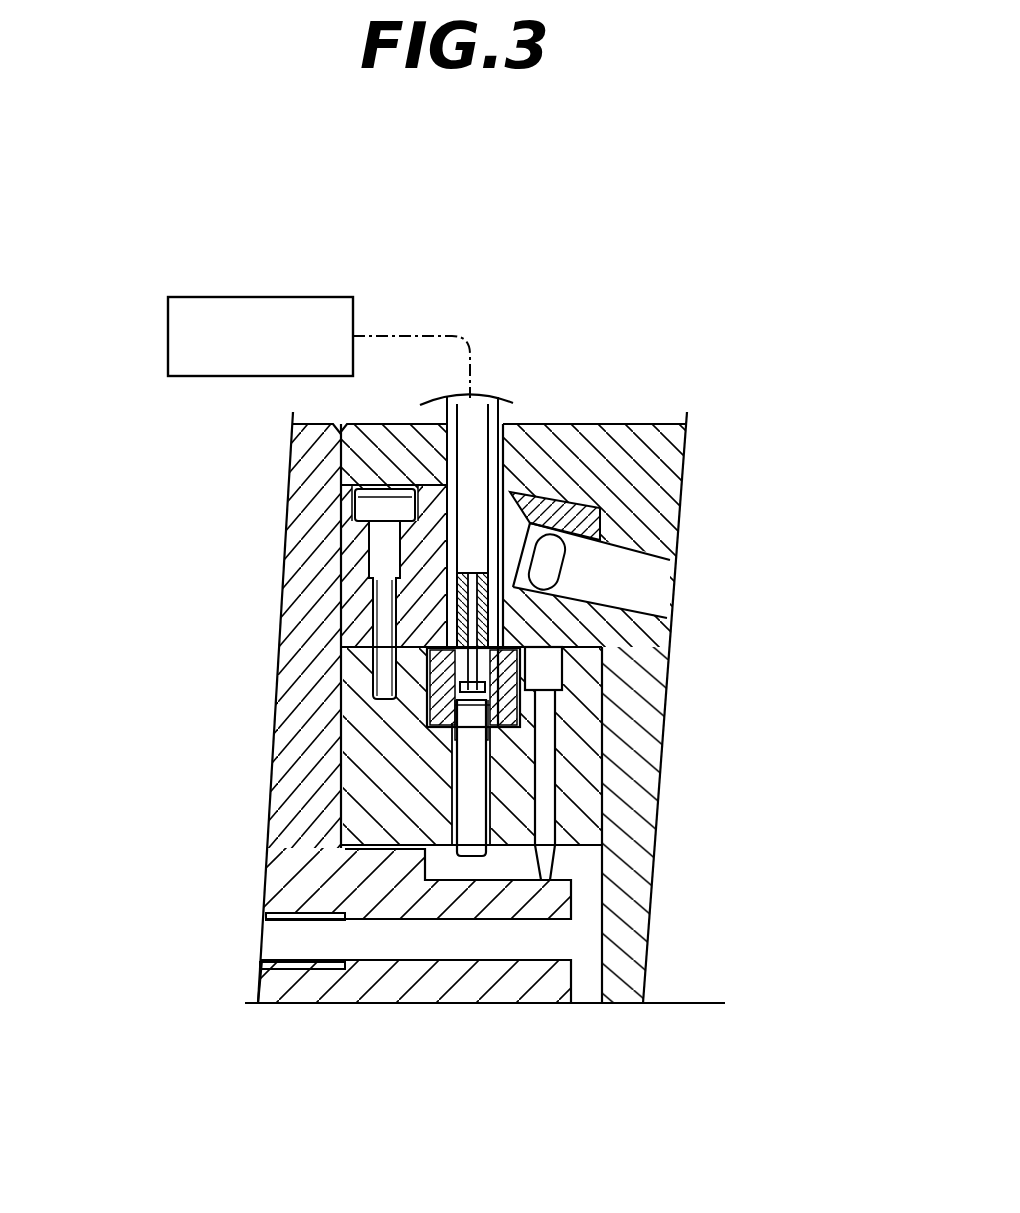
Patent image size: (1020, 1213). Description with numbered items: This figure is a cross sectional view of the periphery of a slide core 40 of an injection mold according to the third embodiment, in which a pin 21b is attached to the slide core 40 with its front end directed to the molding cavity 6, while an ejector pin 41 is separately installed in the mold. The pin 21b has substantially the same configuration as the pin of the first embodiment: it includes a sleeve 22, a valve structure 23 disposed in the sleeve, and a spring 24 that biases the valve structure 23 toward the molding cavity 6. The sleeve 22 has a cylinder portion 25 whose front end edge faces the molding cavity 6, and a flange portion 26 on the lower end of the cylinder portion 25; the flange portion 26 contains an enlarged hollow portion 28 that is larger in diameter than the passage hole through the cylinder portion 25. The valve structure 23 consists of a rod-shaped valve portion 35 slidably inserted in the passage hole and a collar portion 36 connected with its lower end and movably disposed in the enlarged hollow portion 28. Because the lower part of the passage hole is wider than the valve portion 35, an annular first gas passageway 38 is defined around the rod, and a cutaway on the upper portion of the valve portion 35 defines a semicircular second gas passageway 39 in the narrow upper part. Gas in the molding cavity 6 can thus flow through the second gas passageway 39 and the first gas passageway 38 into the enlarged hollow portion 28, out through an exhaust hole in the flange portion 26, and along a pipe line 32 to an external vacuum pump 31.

The molding cavity 6 is at (587, 927).
The pin 21b is at (473, 882).
The sleeve 22 is at (127, 705).
The valve structure 23 is at (806, 700).
The spring 24 is at (425, 655).
The cylinder portion 25 is at (455, 813).
The flange portion 26 is at (432, 692).
The enlarged hollow portion 28 is at (515, 677).
The external vacuum pump 31 is at (167, 328).
The pipe line 32 is at (398, 336).
The rod-shaped valve portion 35 is at (490, 815).
The collar portion 36 is at (505, 728).
The first gas passageway 38 is at (557, 760).
The second gas passageway 39 is at (452, 817).
The slide core 40 is at (578, 825).
The ejector pin 41 is at (385, 947).